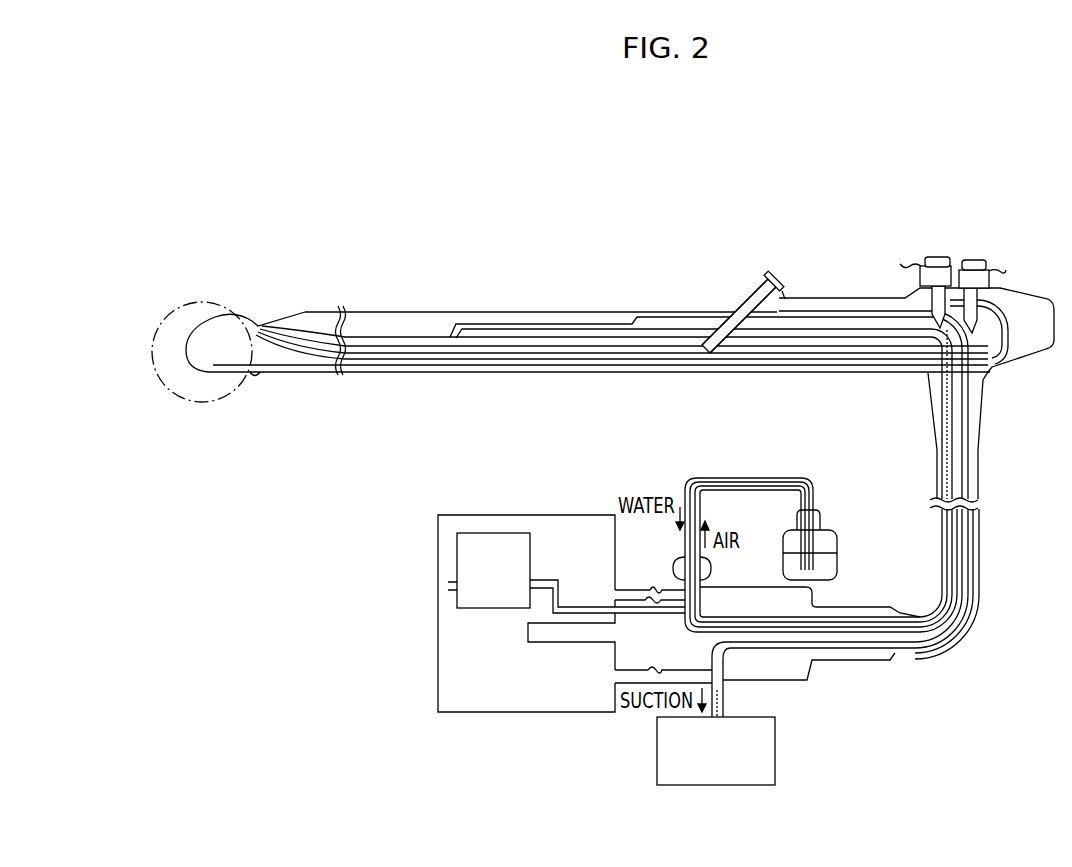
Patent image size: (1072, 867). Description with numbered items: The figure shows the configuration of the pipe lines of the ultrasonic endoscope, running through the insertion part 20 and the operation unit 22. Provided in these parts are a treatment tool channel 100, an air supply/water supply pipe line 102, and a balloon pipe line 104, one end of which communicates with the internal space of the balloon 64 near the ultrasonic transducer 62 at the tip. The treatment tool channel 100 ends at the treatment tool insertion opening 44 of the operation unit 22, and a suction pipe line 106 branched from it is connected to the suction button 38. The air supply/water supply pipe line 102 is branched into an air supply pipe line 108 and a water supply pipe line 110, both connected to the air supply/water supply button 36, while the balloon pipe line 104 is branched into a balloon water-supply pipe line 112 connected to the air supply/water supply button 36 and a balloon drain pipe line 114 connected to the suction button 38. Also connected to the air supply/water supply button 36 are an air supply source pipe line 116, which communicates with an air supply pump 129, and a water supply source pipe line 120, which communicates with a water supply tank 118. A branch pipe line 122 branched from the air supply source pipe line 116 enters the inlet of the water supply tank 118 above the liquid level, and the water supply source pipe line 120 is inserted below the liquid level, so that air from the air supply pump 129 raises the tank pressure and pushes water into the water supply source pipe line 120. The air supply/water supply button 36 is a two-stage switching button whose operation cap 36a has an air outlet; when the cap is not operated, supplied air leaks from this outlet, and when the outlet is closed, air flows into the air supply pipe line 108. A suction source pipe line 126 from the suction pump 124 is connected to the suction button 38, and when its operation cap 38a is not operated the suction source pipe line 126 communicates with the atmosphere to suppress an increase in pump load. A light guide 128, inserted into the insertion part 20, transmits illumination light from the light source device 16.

The light source device 16 is at (497, 712).
The insertion part 20 is at (469, 262).
The operation unit 22 is at (905, 232).
The air supply/water supply button 36 is at (938, 257).
The operation cap 36a is at (889, 256).
The suction button 38 is at (975, 260).
The operation cap 38a is at (1016, 266).
The treatment tool insertion opening 44 is at (772, 275).
The ultrasonic transducer 62 is at (207, 305).
The balloon 64 is at (216, 408).
The treatment tool channel 100 is at (433, 338).
The air supply/water supply pipe line 102 is at (368, 337).
The balloon pipe line 104 is at (396, 364).
The suction pipe line 106 is at (760, 358).
The air supply pipe line 108 is at (660, 338).
The water supply pipe line 110 is at (708, 328).
The balloon water-supply pipe line 112 is at (650, 312).
The balloon drain pipe line 114 is at (652, 365).
The air supply source pipe line 116 is at (942, 407).
The water supply tank 118 is at (840, 556).
The water supply source pipe line 120 is at (959, 463).
The branch pipe line 122 is at (758, 488).
The suction pump 124 is at (777, 750).
The suction source pipe line 126 is at (972, 422).
The light guide 128 is at (568, 644).
The air supply pump 129 is at (492, 532).